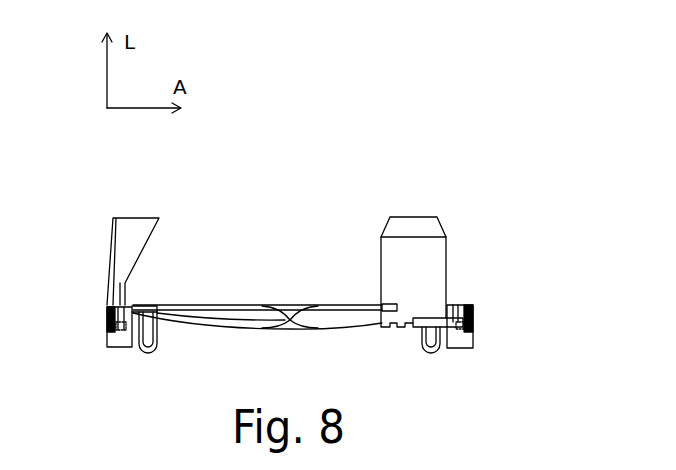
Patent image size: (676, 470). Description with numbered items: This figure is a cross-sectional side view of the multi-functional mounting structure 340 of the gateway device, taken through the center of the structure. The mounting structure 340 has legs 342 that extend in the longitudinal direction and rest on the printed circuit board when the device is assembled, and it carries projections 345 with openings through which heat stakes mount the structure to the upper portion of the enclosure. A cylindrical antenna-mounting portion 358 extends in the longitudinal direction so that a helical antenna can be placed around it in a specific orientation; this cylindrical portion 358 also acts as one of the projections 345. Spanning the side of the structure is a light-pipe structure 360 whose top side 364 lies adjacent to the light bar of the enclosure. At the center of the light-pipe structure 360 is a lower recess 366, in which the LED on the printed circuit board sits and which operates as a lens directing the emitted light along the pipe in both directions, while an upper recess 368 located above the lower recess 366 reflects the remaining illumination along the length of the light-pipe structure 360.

The multi-functional mounting structure 340 is at (302, 203).
The legs 342 is at (118, 338).
The projections 345 is at (136, 228).
The cylindrical antenna-mounting portion 358 is at (424, 270).
The light-pipe structure 360 is at (250, 318).
The top side 364 is at (347, 303).
The lower recess 366 is at (292, 327).
The upper recess 368 is at (291, 310).